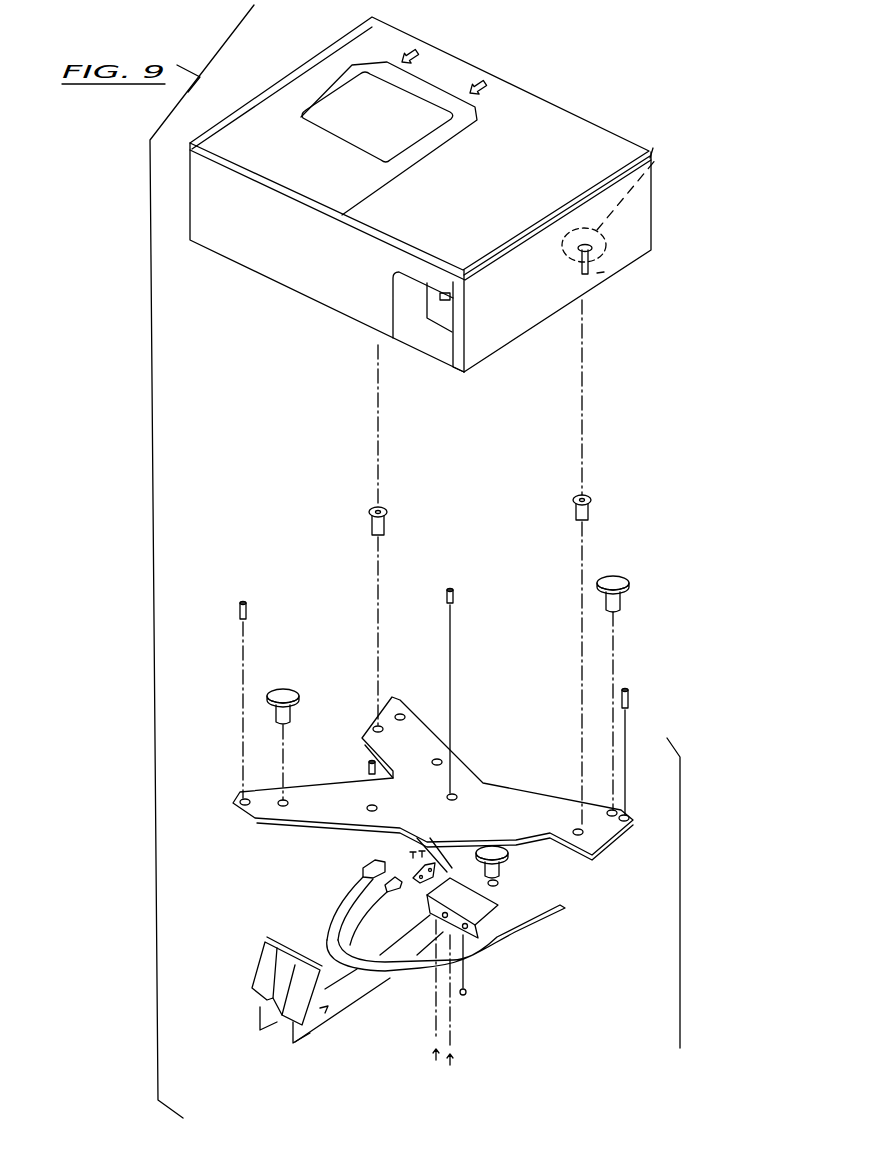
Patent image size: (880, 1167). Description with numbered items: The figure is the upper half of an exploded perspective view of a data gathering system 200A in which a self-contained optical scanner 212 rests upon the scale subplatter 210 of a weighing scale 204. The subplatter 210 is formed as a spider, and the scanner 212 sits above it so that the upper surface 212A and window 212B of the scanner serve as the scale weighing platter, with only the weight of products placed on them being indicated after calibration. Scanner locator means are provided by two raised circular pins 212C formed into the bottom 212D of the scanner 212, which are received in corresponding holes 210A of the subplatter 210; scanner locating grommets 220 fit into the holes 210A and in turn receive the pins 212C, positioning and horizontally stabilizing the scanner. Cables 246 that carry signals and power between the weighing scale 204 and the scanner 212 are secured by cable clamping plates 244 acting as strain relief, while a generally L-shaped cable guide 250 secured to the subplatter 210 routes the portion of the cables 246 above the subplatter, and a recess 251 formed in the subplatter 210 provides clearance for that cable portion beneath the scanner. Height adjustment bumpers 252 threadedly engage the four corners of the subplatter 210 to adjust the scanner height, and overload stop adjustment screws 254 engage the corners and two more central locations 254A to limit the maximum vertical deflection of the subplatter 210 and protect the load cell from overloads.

The data entry terminal assembly 200A is at (282, 468).
The weighing scale 204 is at (680, 912).
The scale subplatter 210 is at (483, 783).
The holes 210A is at (485, 803).
The optical scanner 212 is at (652, 206).
The upper surface 212A is at (563, 112).
The window 212B is at (425, 100).
The pins 212C is at (623, 283).
The bottom of the optical scanner 212D is at (660, 150).
The scanner locating grommets 220 is at (387, 527).
The cable clamping plates 244 is at (417, 896).
The cables 246 is at (490, 950).
The cable guide 250 is at (252, 978).
The recess 251 is at (483, 905).
The height adjustment bumpers 252 is at (628, 583).
The adjustment screws 254 is at (240, 608).
The central locations 254A is at (372, 812).